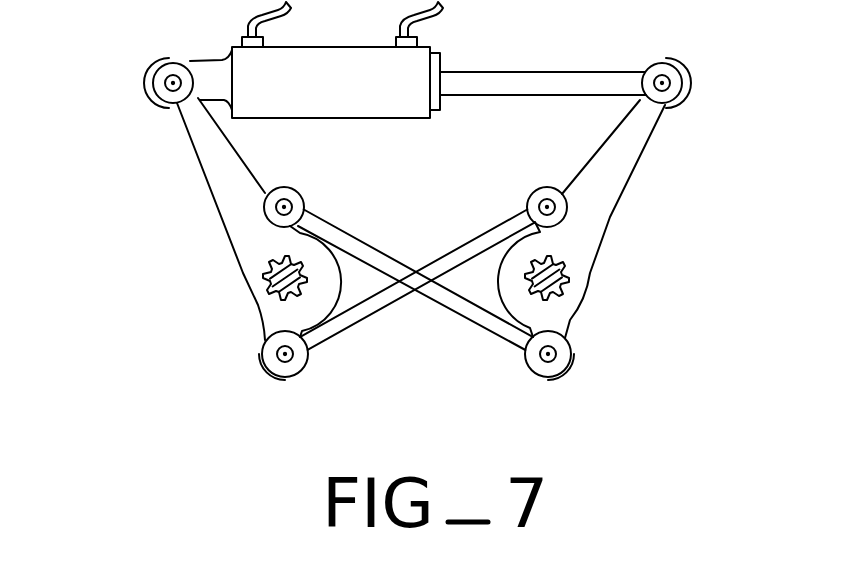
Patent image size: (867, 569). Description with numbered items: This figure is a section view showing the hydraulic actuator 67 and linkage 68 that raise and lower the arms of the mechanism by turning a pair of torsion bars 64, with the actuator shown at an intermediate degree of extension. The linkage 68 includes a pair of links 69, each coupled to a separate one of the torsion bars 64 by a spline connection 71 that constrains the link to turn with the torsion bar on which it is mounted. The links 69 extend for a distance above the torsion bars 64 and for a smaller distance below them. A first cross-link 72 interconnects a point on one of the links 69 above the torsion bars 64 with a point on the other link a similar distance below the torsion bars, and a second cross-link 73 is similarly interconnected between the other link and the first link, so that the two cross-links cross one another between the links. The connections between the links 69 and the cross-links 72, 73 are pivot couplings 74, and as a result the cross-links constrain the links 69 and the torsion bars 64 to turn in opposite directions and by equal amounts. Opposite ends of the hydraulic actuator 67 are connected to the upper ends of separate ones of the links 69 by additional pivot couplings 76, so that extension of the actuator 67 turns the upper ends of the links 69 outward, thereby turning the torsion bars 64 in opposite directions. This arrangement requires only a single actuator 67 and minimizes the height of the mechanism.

The torsion bar 64 is at (277, 282).
The hydraulic actuator 67 is at (303, 93).
The linkage 68 is at (708, 180).
The link 69 is at (205, 182).
The spline connection 71 is at (250, 302).
The first cross-link 72 is at (362, 327).
The second cross-link 73 is at (368, 240).
The pivot coupling 74 is at (318, 183).
The pivot coupling 76 is at (132, 59).